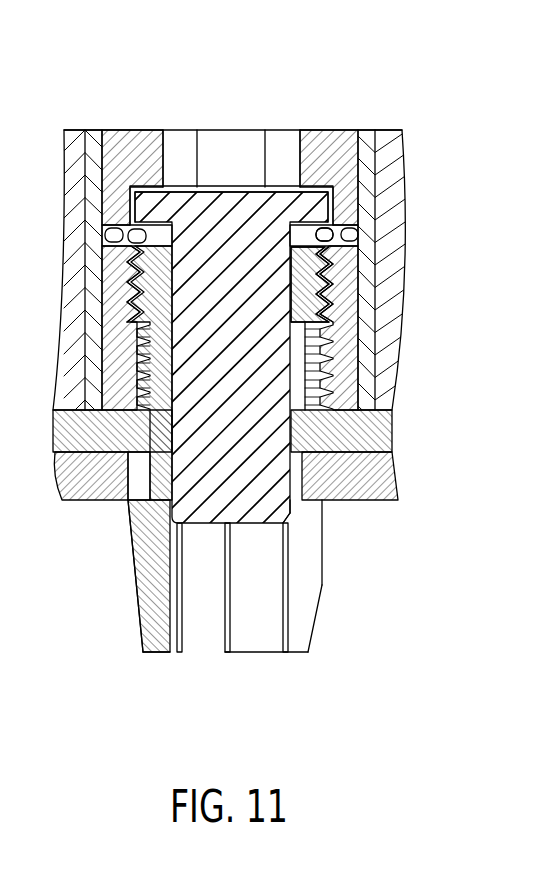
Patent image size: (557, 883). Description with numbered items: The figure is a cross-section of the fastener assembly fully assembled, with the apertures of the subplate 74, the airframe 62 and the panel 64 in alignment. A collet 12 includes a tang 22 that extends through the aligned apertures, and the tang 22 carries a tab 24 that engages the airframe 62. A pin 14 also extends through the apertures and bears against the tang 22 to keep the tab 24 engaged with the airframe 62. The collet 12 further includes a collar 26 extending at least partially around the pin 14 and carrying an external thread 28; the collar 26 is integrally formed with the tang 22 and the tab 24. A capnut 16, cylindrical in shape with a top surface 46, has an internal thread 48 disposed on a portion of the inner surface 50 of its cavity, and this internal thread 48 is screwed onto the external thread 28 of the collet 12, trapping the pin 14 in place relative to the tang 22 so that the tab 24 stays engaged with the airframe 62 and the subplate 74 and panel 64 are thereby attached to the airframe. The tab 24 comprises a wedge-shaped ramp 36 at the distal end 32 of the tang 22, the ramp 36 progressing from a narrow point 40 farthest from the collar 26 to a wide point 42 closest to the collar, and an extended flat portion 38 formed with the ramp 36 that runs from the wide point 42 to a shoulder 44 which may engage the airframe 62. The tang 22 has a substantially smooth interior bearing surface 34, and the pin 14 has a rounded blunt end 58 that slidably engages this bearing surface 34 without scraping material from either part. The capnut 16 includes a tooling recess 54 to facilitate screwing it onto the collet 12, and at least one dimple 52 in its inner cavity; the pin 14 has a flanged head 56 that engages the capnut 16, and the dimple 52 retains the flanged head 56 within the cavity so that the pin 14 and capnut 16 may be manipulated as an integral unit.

The collet 12 is at (108, 245).
The pin 14 is at (222, 205).
The capnut 16 is at (333, 138).
The tang 22 is at (160, 385).
The tab 24 is at (88, 634).
The collar 26 is at (350, 238).
The external thread 28 is at (320, 278).
The distal end 32 is at (274, 660).
The interior bearing surface 34 is at (245, 602).
The wedge-shaped ramp 36 is at (302, 627).
The extended flat portion 38 is at (312, 552).
The narrow point 40 is at (140, 653).
The wide point 42 is at (130, 582).
The shoulder 44 is at (137, 497).
The top surface 46 is at (127, 126).
The internal thread 48 is at (333, 290).
The inner surface 50 is at (150, 199).
The dimple 52 is at (328, 233).
The tooling recess 54 is at (178, 140).
The flanged head 56 is at (177, 188).
The rounded blunt end 58 is at (290, 517).
The airframe 62 is at (63, 477).
The panel 64 is at (78, 145).
The subplate 74 is at (58, 427).